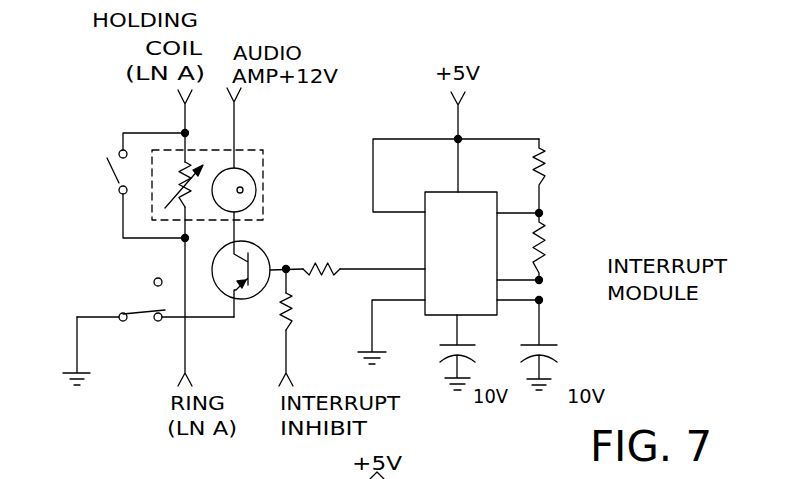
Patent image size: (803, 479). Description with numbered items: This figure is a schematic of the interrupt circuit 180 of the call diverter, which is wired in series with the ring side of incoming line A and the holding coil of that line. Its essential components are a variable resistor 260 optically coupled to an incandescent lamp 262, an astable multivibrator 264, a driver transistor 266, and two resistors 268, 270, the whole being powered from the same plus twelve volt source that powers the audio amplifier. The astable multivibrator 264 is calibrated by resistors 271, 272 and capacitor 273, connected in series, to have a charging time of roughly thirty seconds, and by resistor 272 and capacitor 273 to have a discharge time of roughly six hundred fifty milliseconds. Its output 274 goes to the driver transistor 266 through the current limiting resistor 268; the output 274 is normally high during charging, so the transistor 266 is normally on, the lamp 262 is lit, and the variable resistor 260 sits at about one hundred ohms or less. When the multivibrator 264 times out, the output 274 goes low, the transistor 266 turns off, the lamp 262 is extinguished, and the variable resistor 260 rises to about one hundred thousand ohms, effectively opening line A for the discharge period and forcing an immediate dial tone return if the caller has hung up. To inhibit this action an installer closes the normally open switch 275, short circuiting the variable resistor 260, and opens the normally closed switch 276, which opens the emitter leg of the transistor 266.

The interrupt circuit 180 is at (674, 105).
The variable resistor 260 is at (183, 178).
The incandescent lamp 262 is at (265, 182).
The astable multivibrator 264 is at (461, 253).
The driver transistor 266 is at (268, 258).
The current limiting resistor 268 is at (347, 262).
The resistor 270 is at (291, 314).
The resistor 271 is at (547, 164).
The resistor 272 is at (547, 231).
The capacitor 273 is at (553, 335).
The output 274 is at (421, 263).
The switch 275 is at (108, 176).
The switch 276 is at (146, 305).